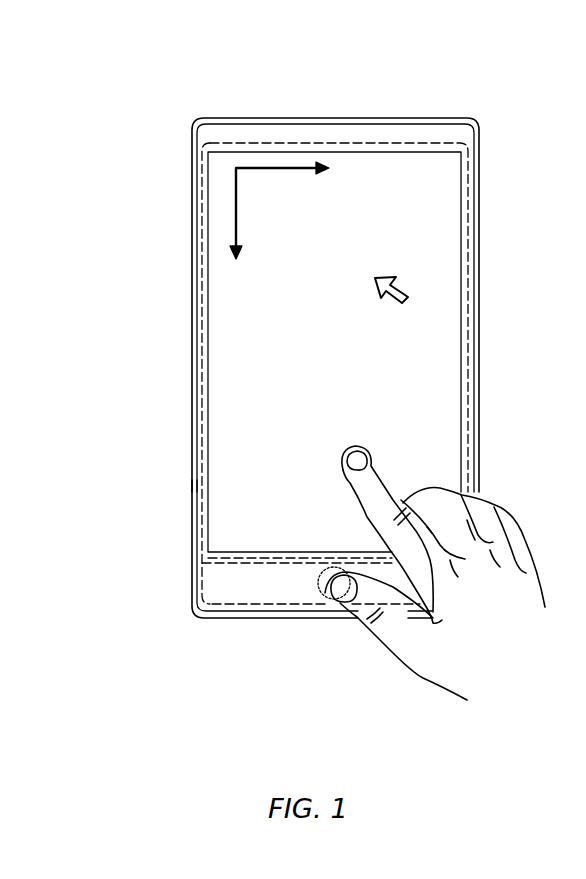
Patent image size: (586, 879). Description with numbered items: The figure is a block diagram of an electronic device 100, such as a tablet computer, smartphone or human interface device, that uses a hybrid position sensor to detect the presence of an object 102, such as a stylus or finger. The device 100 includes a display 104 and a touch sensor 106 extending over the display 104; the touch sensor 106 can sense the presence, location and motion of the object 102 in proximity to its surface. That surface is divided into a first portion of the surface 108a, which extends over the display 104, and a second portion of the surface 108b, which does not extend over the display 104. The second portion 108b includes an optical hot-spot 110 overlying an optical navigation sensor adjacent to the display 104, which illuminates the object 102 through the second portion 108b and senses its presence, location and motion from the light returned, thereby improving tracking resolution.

The device 100 is at (384, 86).
The object 102 is at (368, 462).
The display 104 is at (463, 256).
The touch sensor 106 is at (477, 296).
The first portion of the surface 108a is at (203, 355).
The second portion of the surface 108b is at (203, 589).
The optical hot-spot 110 is at (337, 566).